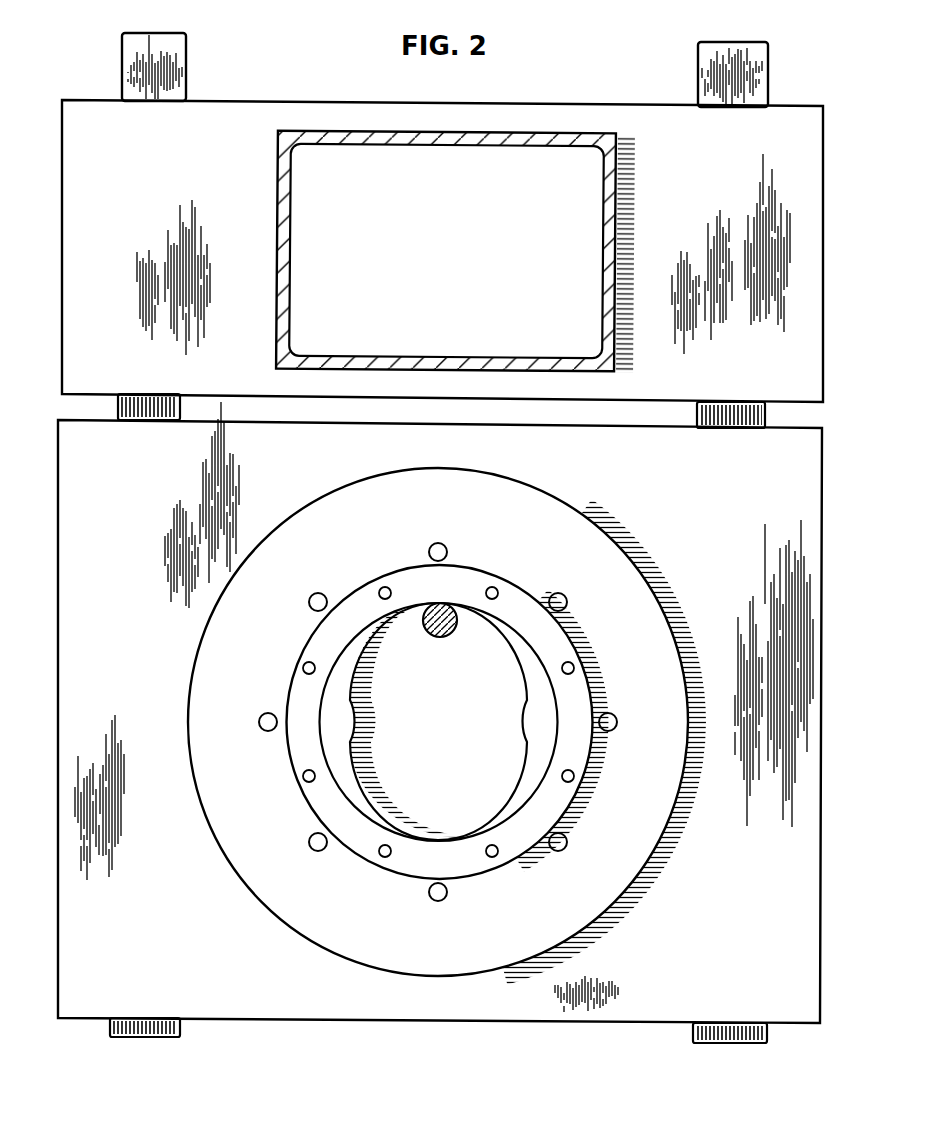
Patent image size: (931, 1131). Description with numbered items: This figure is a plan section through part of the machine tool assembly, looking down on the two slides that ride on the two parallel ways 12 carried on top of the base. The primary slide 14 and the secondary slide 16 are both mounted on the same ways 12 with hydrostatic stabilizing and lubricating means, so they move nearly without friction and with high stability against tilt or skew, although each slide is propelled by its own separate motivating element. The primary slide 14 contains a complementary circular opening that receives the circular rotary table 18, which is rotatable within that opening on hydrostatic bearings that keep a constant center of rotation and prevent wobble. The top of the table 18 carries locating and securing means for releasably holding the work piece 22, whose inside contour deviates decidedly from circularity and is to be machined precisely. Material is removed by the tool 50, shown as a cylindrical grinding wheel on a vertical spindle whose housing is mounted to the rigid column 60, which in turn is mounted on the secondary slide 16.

The ways 12 is at (174, 73).
The primary slide 14 is at (197, 516).
The secondary slide 16 is at (166, 216).
The rotary table 18 is at (218, 645).
The work piece 22 is at (302, 748).
The tool 50 is at (440, 638).
The rigid column 60 is at (277, 266).